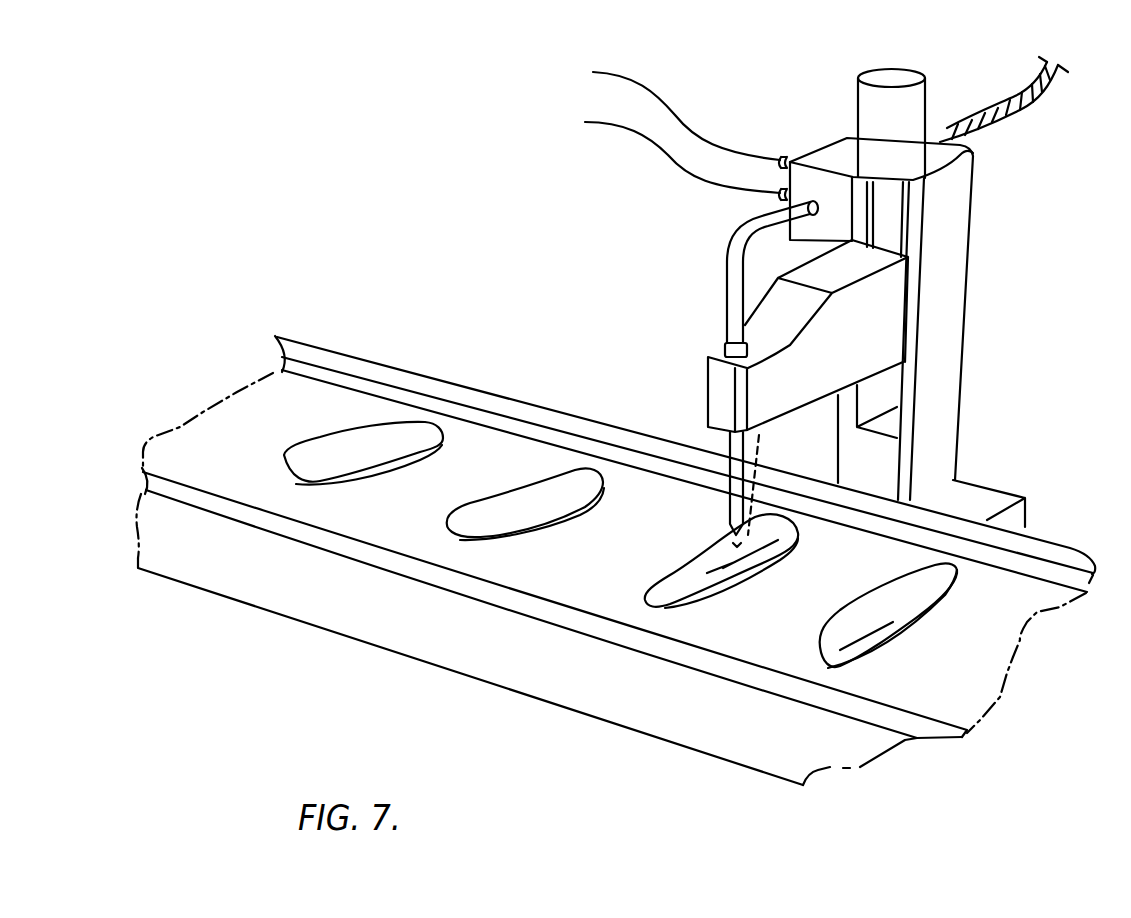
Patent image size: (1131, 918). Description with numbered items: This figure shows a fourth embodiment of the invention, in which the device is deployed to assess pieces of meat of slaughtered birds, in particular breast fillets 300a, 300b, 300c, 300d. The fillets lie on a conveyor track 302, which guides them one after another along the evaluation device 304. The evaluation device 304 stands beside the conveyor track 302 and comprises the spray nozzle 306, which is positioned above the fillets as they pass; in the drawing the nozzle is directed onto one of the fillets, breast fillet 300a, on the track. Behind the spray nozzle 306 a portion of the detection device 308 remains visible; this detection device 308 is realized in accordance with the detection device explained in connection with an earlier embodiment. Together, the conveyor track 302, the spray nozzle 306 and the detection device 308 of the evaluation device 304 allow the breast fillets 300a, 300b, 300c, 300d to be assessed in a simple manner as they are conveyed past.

The breast fillet 300a is at (857, 632).
The breast fillet 300b is at (676, 582).
The breast fillet 300c is at (553, 490).
The breast fillet 300d is at (382, 433).
The conveyor track 302 is at (325, 510).
The evaluation device 304 is at (990, 302).
The spray nozzle 306 is at (700, 448).
The detection device 308 is at (690, 440).